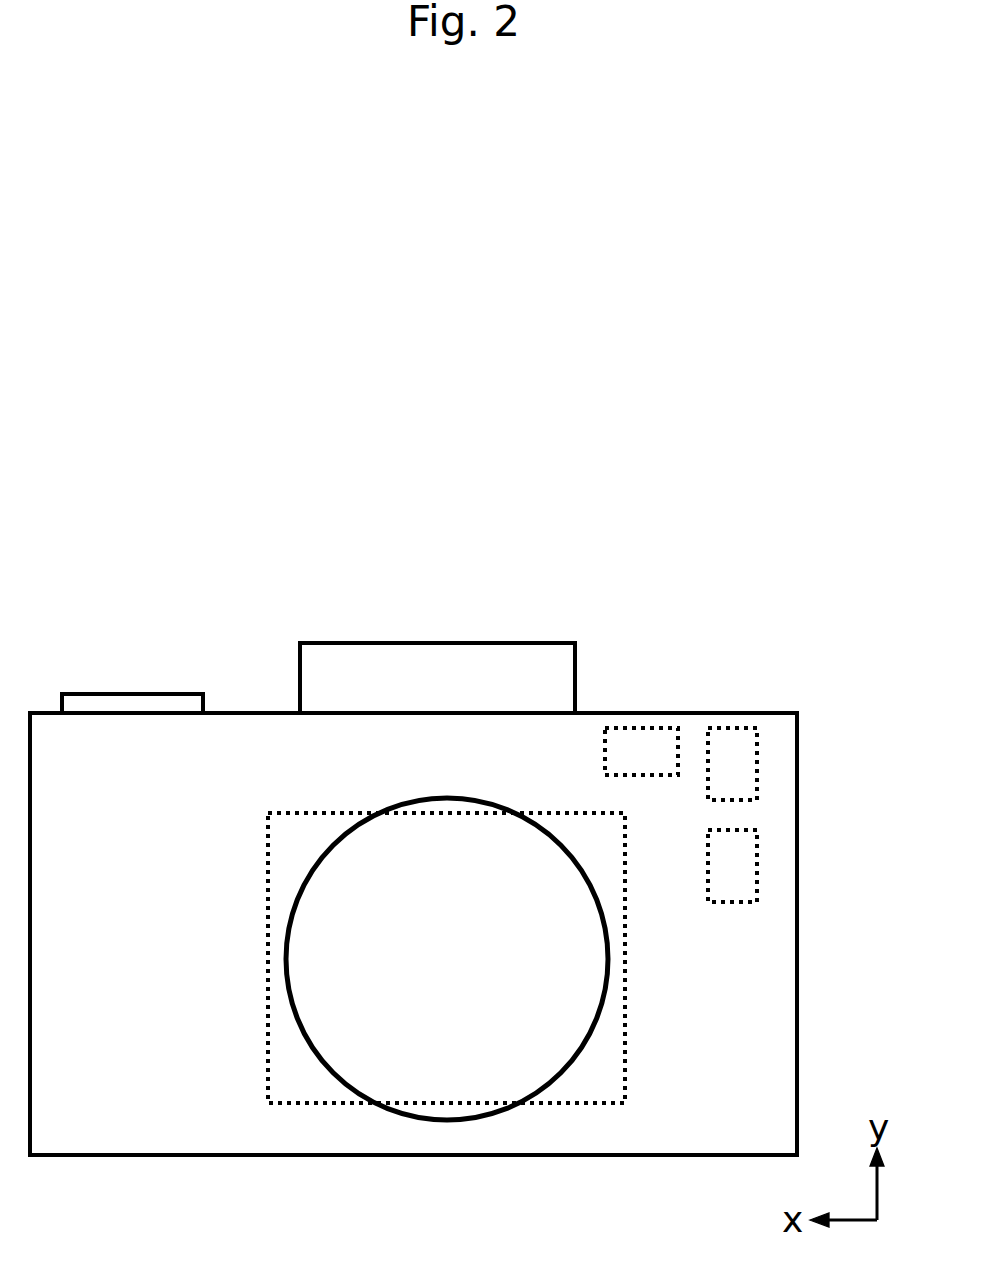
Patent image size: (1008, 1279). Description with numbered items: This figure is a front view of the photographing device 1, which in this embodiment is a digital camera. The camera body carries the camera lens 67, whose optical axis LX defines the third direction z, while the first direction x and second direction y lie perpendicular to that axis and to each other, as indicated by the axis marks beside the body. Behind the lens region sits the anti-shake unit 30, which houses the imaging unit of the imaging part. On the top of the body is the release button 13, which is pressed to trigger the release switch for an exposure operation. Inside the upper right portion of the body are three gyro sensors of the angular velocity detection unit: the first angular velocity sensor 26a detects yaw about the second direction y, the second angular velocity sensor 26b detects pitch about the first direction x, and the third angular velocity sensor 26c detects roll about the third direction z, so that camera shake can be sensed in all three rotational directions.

The photographing device 1 is at (798, 713).
The release button 13 is at (114, 694).
The first angular velocity sensor 26a is at (745, 727).
The second angular velocity sensor 26b is at (644, 727).
The third angular velocity sensor 26c is at (753, 865).
The anti-shake unit 30 is at (270, 972).
The camera lens 67 is at (305, 880).